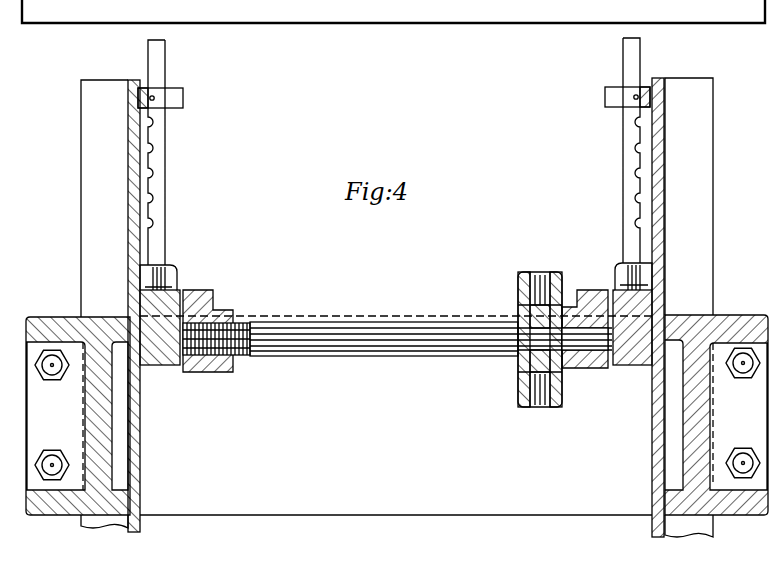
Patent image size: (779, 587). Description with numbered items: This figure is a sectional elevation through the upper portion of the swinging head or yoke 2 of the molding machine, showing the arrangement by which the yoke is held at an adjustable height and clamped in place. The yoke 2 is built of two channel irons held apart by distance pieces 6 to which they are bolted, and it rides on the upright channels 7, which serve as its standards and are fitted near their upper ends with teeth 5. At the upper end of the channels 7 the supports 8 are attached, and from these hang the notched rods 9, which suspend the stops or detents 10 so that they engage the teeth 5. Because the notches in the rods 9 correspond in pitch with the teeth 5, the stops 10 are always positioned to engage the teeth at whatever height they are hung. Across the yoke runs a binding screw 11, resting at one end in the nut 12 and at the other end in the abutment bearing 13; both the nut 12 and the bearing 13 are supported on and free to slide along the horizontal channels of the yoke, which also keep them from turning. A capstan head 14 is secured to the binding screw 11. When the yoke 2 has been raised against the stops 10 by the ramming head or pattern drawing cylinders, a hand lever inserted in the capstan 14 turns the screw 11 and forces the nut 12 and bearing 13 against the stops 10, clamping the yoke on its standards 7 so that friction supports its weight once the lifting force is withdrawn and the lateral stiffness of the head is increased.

The swinging head or yoke 2 is at (400, 12).
The teeth 5 is at (133, 162).
The distance pieces 6 is at (720, 418).
The channels 7 is at (100, 92).
The supports 8 is at (176, 100).
The notched rods 9 is at (165, 175).
The stops or detents 10 is at (178, 356).
The binding screw 11 is at (387, 356).
The nut 12 is at (214, 308).
The abutment bearing 13 is at (582, 292).
The capstan head 14 is at (527, 293).